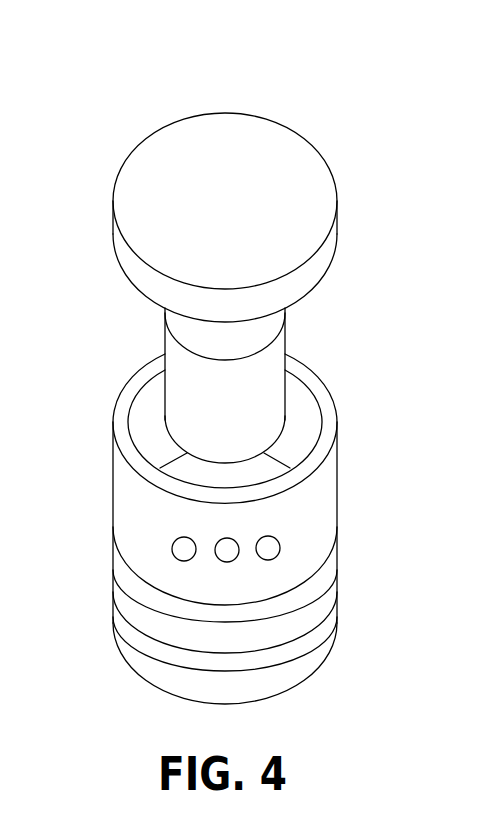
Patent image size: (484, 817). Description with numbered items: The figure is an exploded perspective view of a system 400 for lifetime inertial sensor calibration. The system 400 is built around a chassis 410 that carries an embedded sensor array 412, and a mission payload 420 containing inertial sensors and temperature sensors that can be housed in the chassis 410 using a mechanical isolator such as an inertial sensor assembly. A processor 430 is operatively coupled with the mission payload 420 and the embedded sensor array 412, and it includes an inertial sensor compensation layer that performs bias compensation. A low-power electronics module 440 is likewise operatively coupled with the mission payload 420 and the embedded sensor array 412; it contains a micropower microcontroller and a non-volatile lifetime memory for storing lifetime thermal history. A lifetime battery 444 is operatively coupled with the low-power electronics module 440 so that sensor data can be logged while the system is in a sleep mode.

The system for lifetime inertial sensor calibration 400 is at (168, 90).
The processor 430 is at (128, 205).
The mission payload 420 is at (262, 385).
The chassis 410 is at (337, 492).
The embedded sensor array 412 is at (226, 538).
The low-power electronics module 440 is at (337, 567).
The lifetime battery 444 is at (337, 623).